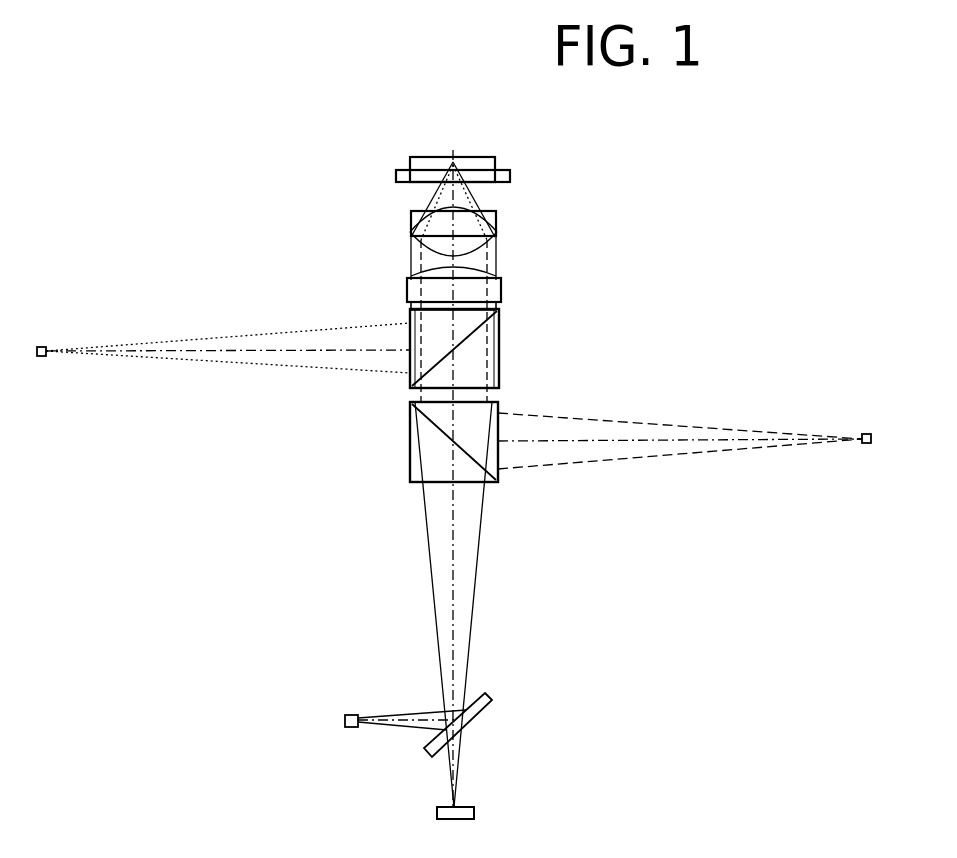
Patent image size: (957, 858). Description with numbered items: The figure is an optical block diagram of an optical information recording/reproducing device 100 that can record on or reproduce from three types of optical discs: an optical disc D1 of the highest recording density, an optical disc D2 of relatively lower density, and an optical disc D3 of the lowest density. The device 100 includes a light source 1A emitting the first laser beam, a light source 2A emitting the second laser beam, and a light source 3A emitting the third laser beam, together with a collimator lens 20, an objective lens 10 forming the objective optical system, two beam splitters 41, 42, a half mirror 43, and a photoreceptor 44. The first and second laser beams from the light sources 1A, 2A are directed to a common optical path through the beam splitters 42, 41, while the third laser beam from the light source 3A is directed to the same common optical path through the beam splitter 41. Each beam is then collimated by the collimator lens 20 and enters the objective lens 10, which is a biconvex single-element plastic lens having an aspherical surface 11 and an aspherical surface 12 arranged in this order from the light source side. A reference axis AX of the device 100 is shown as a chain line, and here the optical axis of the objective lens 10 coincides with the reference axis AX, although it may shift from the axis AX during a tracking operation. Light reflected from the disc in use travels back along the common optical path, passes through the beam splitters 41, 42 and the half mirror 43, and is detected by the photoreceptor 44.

The optical information recording/reproducing device 100 is at (343, 98).
The reference axis AX is at (450, 201).
The optical disc D1 is at (503, 161).
The optical disc D2 is at (508, 177).
The optical disc D3 is at (442, 152).
The objective lens 10 is at (454, 230).
The surface 11 is at (427, 253).
The surface 12 is at (490, 203).
The collimator lens 20 is at (428, 290).
The beam splitter 41 is at (499, 344).
The beam splitter 42 is at (410, 445).
The half mirror 43 is at (488, 712).
The photoreceptor 44 is at (512, 819).
The light source 1A is at (867, 434).
The light source 2A is at (345, 720).
The light source 3A is at (42, 347).